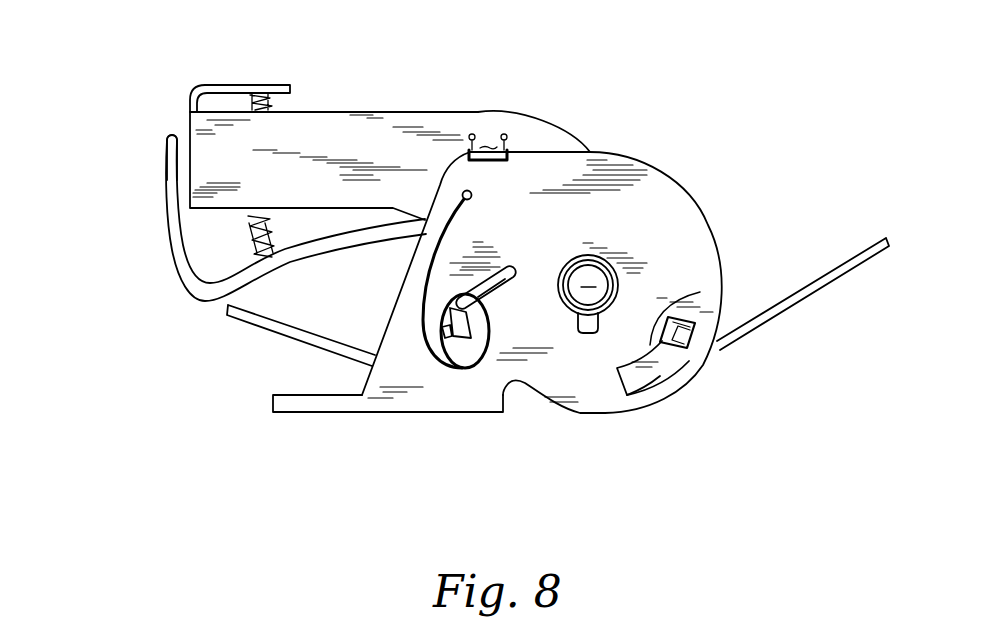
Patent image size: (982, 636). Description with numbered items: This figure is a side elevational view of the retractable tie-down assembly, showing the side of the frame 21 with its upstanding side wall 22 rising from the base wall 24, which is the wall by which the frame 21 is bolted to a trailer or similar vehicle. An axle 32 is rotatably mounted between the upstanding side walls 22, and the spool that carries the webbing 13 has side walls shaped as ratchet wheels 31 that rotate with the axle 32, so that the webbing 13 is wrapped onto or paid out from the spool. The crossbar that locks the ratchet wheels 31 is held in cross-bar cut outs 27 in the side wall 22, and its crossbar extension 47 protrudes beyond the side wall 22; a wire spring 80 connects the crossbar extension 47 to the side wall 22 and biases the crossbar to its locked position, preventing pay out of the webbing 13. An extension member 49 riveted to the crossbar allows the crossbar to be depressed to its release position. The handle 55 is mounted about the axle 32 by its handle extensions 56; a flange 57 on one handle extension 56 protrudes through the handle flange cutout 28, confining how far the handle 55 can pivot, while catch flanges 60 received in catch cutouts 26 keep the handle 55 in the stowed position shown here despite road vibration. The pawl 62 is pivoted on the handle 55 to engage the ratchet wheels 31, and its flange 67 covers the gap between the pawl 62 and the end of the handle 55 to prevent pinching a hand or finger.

The webbing 13 is at (822, 287).
The frame 21 is at (390, 300).
The upstanding side walls 22 is at (708, 200).
The base wall 24 is at (410, 413).
The catch cutouts 26 is at (499, 136).
The cross-bar cut outs 27 is at (509, 272).
The handle flange cutout 28 is at (642, 387).
The ratchet wheels 31 is at (664, 368).
The axle 32 is at (589, 289).
The crossbar extension 47 is at (470, 350).
The extension member 49 is at (252, 325).
The handle 55 is at (189, 108).
The handle extensions 56 is at (700, 292).
The flange 57 is at (686, 316).
The catch flanges 60 is at (482, 146).
The pawl 62 is at (160, 260).
The flange 67 is at (163, 160).
The wire spring 80 is at (460, 328).